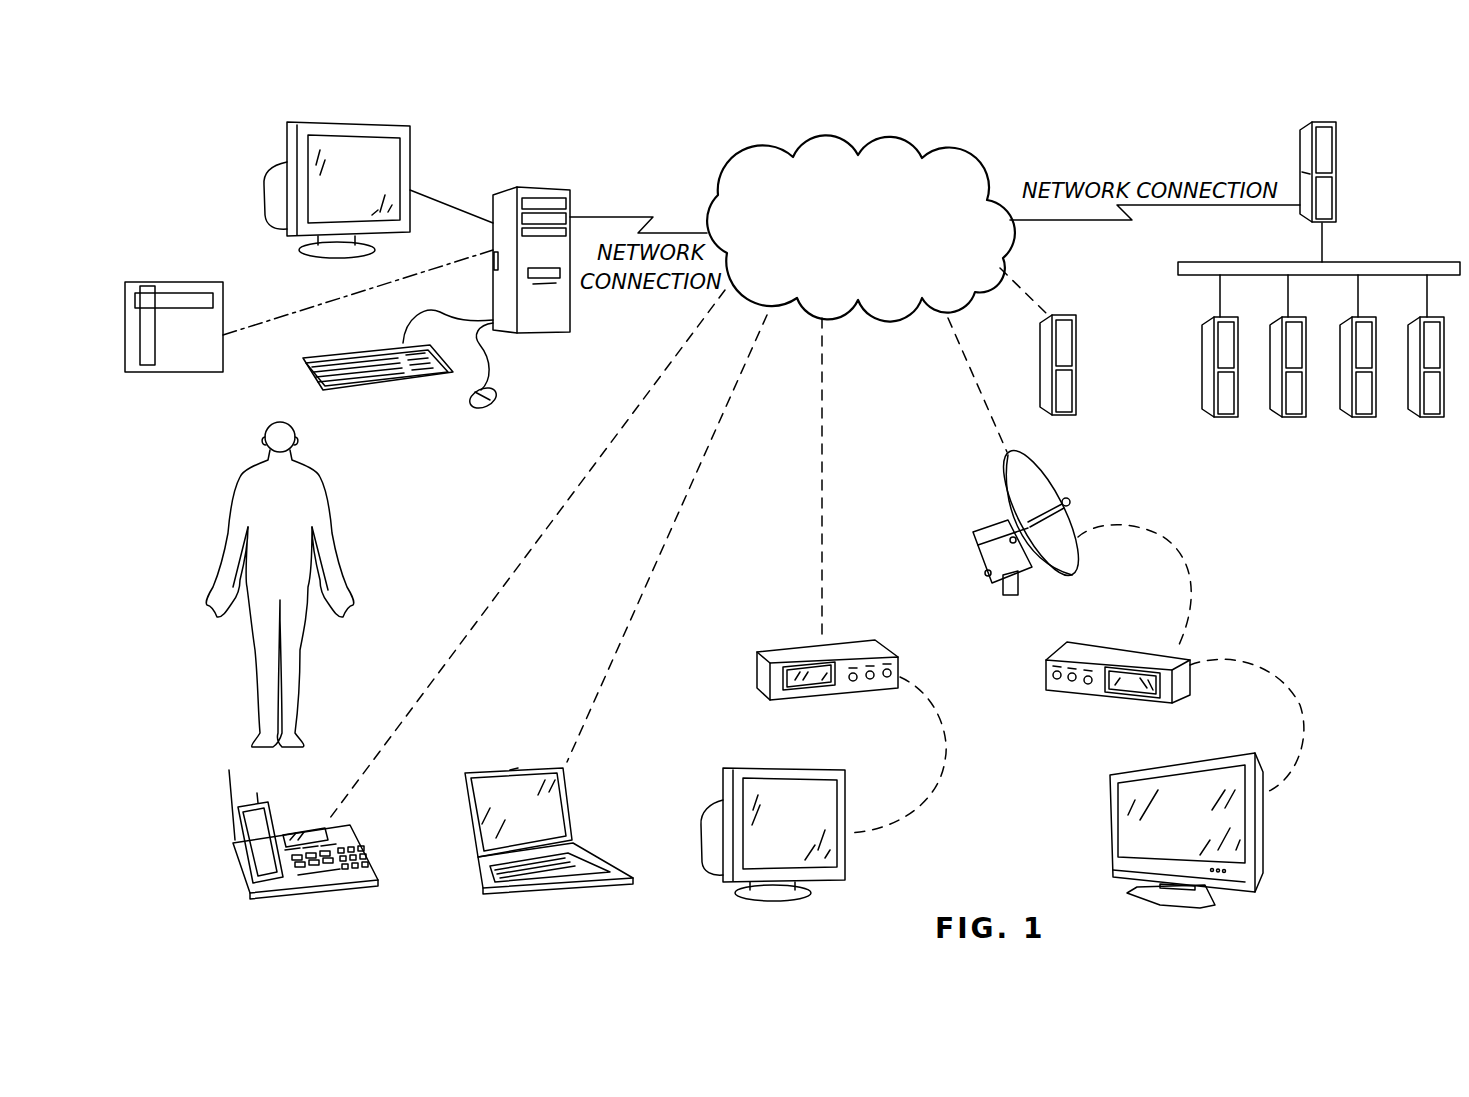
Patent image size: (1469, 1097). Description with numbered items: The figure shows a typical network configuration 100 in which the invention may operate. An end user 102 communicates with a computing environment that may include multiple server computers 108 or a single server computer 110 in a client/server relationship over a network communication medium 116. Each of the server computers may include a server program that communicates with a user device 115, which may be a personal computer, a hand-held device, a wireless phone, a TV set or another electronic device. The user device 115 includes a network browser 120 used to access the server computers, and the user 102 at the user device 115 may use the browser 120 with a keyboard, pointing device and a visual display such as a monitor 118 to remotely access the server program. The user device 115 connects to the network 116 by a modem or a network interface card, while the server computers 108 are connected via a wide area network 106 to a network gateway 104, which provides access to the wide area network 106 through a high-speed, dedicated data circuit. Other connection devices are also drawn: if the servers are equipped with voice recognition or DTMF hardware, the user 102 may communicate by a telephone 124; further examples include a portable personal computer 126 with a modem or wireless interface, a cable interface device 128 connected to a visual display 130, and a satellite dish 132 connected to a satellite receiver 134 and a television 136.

The network configuration 100 is at (1145, 104).
The end user 102 is at (327, 500).
The network gateway 104 is at (1335, 147).
The wide area network 106 is at (1398, 262).
The server computers 108 is at (1330, 486).
The single server computer 110 is at (1062, 313).
The user device 115 is at (573, 307).
The network communication medium 116 is at (890, 138).
The monitor 118 is at (277, 160).
The network browser 120 is at (178, 375).
The telephone 124 is at (233, 845).
The portable personal computer 126 is at (540, 770).
The cable interface device 128 is at (790, 650).
The visual display 130 is at (752, 768).
The satellite dish 132 is at (1042, 468).
The satellite receiver 134 is at (1047, 645).
The television 136 is at (1267, 840).